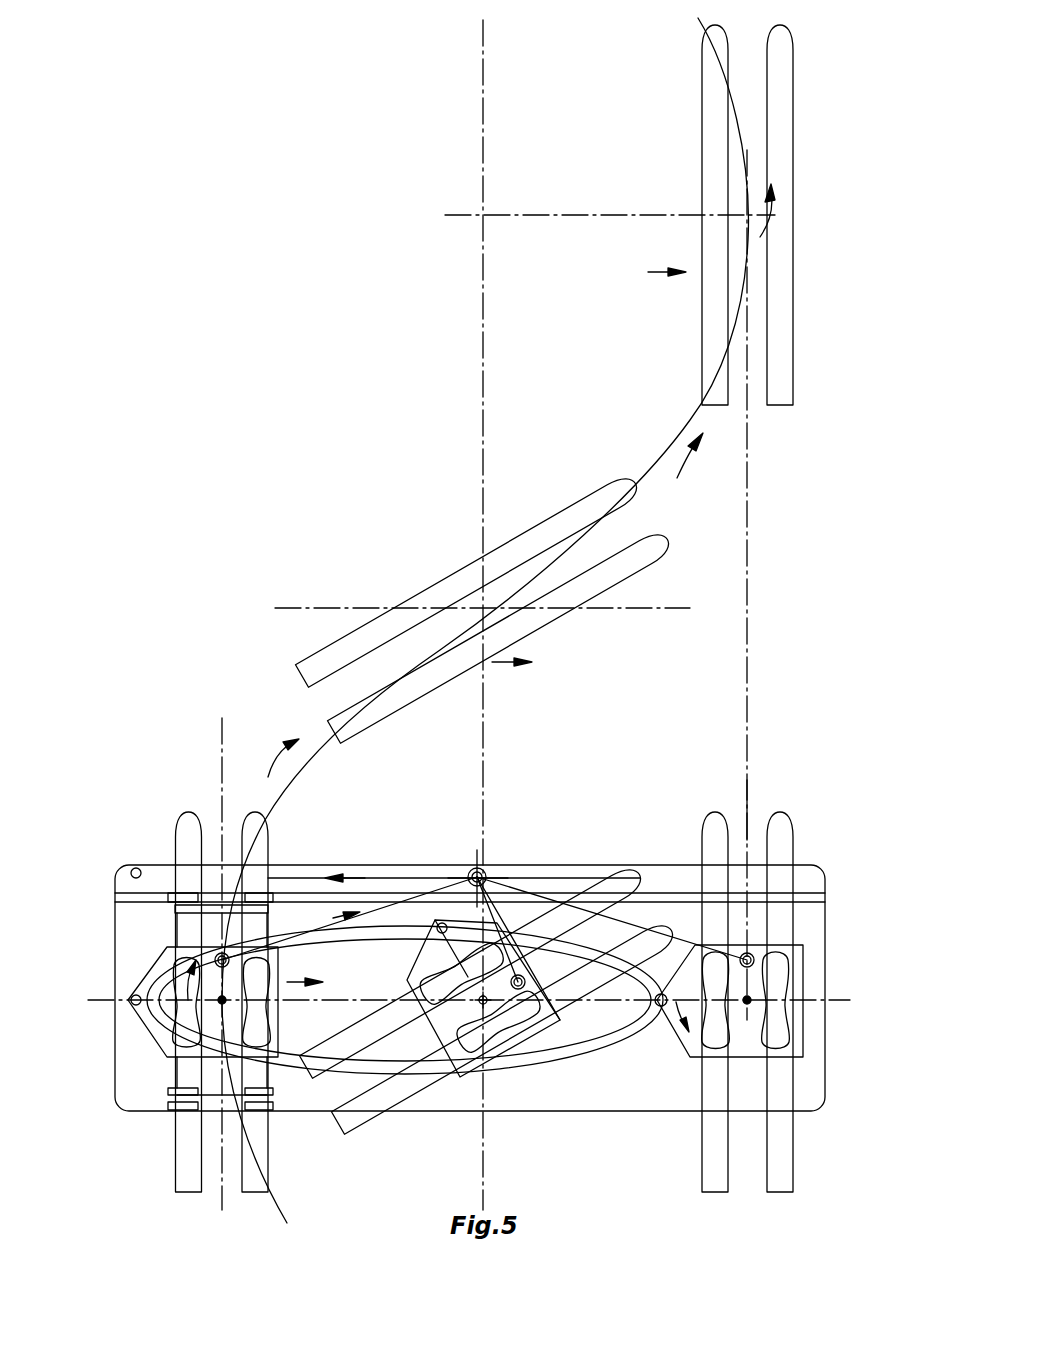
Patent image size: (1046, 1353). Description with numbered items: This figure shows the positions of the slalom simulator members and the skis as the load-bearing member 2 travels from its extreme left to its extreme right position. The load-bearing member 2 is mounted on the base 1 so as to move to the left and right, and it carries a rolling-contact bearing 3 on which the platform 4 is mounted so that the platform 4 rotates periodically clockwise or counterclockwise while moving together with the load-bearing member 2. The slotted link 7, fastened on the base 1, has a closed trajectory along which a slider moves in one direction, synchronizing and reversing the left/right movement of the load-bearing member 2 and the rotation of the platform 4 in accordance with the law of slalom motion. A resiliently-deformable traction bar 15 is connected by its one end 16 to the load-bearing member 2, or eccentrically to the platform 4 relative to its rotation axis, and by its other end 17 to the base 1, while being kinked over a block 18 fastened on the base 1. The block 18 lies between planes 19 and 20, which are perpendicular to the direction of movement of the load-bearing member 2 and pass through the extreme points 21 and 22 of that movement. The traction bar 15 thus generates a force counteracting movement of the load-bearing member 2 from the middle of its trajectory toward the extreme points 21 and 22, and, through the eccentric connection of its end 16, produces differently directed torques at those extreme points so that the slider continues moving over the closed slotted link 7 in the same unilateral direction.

The base 1 is at (137, 940).
The load-bearing member 2 is at (219, 880).
The rolling-contact bearing 3 is at (272, 893).
The platform 4 is at (160, 1040).
The slotted link 7 is at (565, 1045).
The resiliently-deformable traction bar 15 is at (390, 908).
The one end 16 is at (222, 960).
The other end 17 is at (133, 868).
The block 18 is at (477, 877).
The plane 19 is at (222, 745).
The plane 20 is at (750, 812).
The extreme point 21 is at (222, 1000).
The extreme point 22 is at (747, 1000).